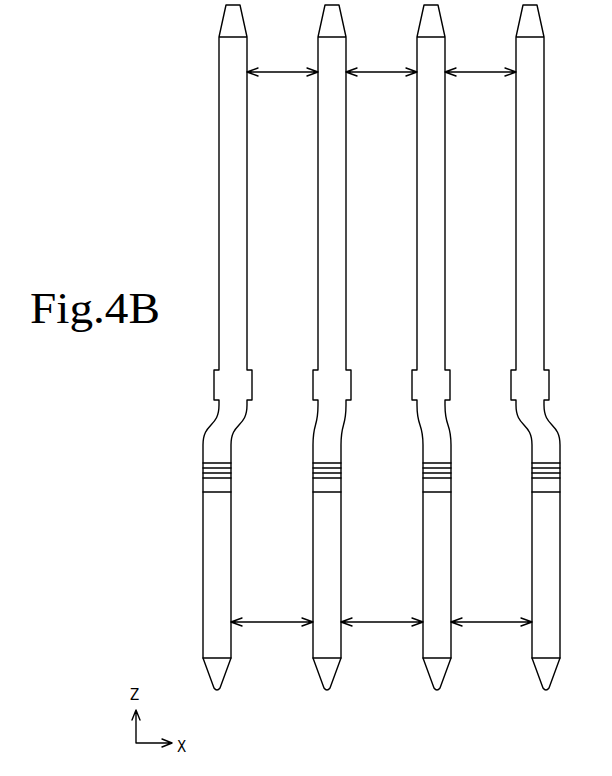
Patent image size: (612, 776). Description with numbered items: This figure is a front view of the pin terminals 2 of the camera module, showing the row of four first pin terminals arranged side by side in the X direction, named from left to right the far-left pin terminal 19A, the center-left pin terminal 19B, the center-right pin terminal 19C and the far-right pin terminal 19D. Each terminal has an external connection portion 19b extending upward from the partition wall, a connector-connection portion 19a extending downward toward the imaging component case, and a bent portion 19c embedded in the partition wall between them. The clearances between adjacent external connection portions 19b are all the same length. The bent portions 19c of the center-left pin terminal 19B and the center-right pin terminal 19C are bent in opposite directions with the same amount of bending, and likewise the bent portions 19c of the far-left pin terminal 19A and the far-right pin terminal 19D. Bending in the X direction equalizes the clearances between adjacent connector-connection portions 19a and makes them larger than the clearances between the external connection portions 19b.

The pin terminals 2 is at (167, 72).
The far-left pin terminal 19A is at (247, 233).
The center-left pin terminal 19B is at (346, 233).
The center-right pin terminal 19C is at (445, 233).
The far-right pin terminal 19D is at (545, 233).
The connector-connection portion 19a is at (231, 567).
The external connection portion 19b is at (247, 336).
The bent portion 19c is at (235, 440).